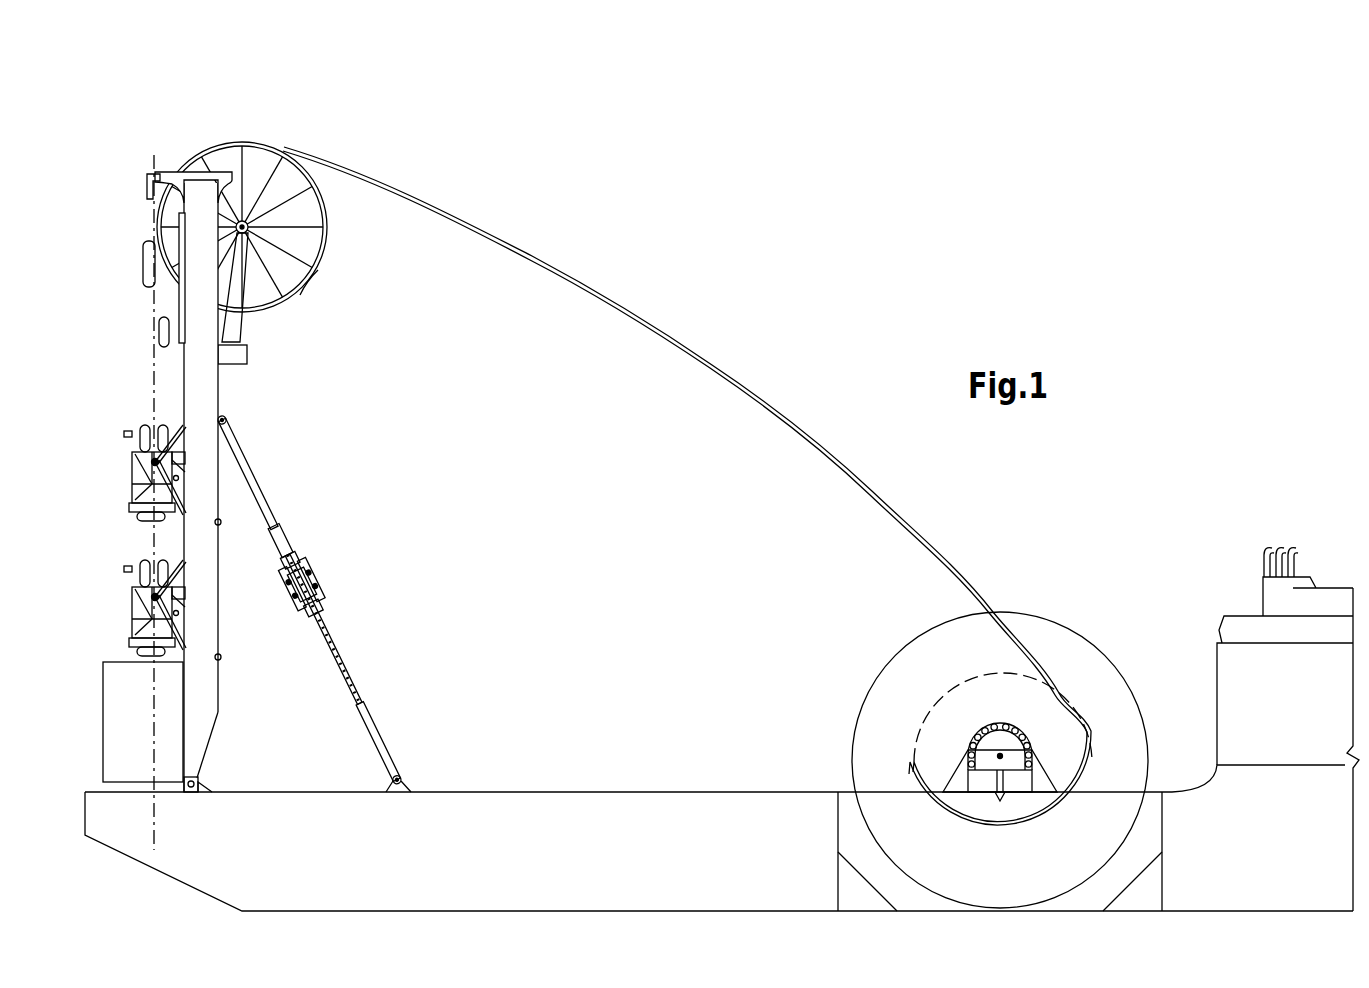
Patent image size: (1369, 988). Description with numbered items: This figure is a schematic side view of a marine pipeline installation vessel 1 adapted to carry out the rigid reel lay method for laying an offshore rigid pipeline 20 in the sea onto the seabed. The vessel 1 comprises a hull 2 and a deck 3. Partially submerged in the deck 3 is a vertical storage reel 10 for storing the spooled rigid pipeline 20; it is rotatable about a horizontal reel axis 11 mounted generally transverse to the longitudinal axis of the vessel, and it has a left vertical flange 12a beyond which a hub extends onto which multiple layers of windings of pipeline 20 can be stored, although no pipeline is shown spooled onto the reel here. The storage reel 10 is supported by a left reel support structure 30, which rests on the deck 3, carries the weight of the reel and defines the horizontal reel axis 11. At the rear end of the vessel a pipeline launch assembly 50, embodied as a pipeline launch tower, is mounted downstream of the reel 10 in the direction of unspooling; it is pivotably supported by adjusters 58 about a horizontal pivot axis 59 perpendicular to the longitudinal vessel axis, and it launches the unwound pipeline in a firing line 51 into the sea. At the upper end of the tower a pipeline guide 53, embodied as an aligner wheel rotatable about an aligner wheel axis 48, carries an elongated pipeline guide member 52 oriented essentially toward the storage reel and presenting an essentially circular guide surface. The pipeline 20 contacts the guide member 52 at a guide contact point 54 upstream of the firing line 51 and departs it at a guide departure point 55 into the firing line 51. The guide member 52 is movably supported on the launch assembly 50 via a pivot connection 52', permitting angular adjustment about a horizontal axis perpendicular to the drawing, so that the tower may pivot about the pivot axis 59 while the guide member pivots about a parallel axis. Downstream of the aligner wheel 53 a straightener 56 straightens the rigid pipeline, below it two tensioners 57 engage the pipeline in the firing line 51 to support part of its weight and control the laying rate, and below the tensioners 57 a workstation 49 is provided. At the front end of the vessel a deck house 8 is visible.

The marine pipeline installation vessel 1 is at (722, 700).
The hull 2 is at (722, 749).
The deck 3 is at (601, 790).
The deck house 8 is at (1253, 566).
The storage reel 10 is at (1011, 731).
The horizontal reel axis 11 is at (1001, 756).
The left vertical flange 12a is at (1034, 727).
The rigid pipeline 20 is at (714, 362).
The left reel support structure 30 is at (1042, 781).
The aligner wheel axis 48 is at (247, 232).
The workstation 49 is at (103, 660).
The pipeline launch assembly 50 is at (313, 596).
The firing line 51 is at (150, 352).
The pipeline guide member 52 is at (275, 321).
The pivot connection 52' is at (259, 303).
The pipeline guide (aligner wheel) 53 is at (286, 235).
The guide contact point 54 is at (283, 155).
The guide departure point 55 is at (157, 236).
The straightener 56 is at (166, 332).
The tensioner 57 is at (133, 428).
The adjuster 58 is at (328, 590).
The horizontal pivot axis 59 is at (200, 783).